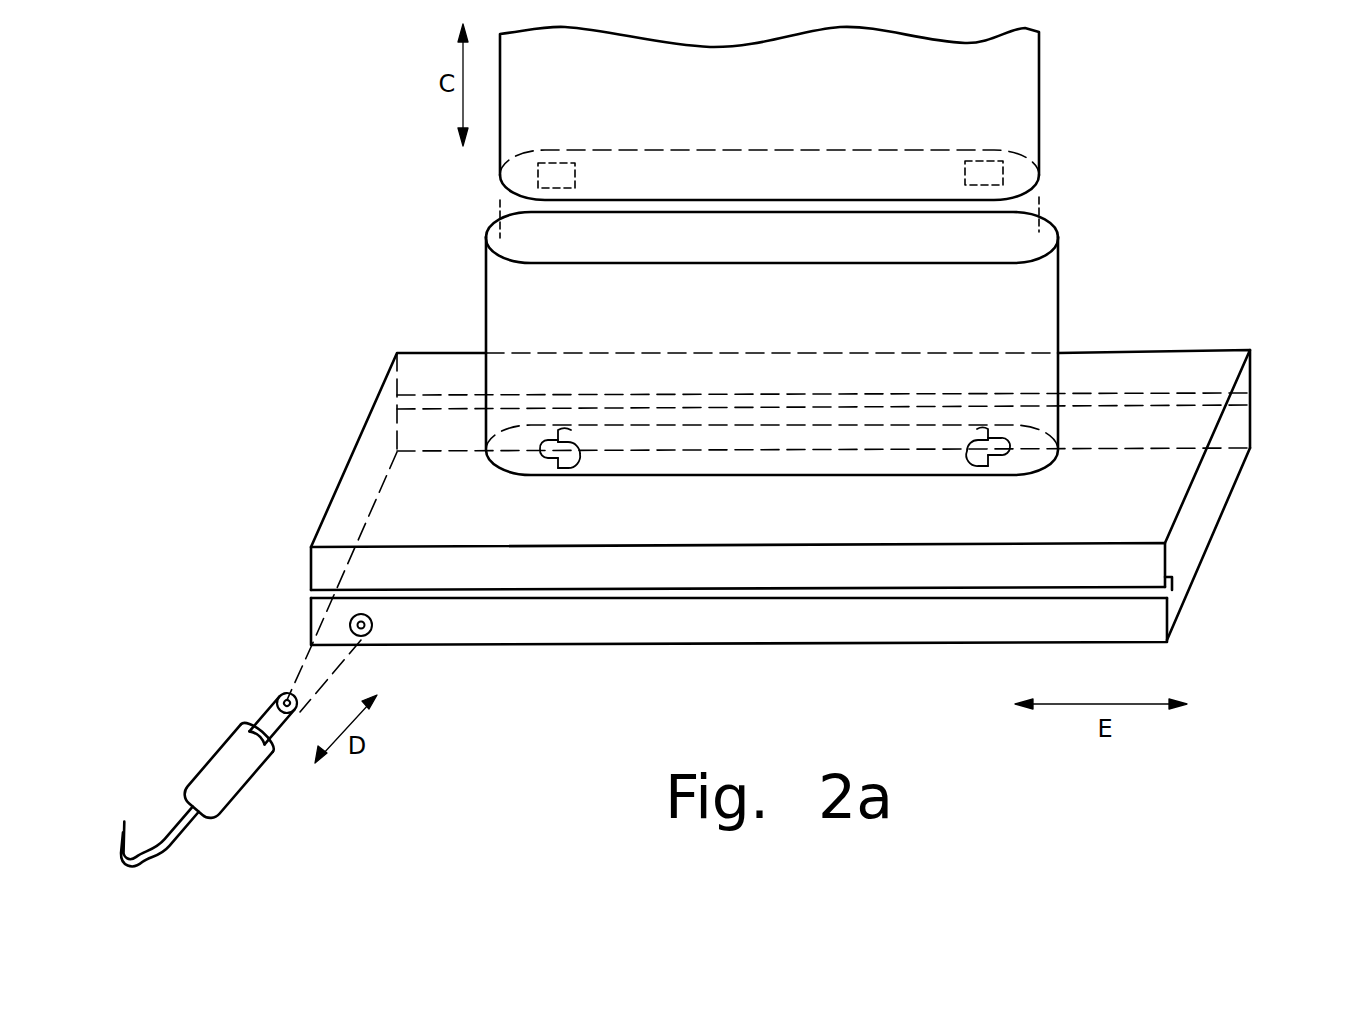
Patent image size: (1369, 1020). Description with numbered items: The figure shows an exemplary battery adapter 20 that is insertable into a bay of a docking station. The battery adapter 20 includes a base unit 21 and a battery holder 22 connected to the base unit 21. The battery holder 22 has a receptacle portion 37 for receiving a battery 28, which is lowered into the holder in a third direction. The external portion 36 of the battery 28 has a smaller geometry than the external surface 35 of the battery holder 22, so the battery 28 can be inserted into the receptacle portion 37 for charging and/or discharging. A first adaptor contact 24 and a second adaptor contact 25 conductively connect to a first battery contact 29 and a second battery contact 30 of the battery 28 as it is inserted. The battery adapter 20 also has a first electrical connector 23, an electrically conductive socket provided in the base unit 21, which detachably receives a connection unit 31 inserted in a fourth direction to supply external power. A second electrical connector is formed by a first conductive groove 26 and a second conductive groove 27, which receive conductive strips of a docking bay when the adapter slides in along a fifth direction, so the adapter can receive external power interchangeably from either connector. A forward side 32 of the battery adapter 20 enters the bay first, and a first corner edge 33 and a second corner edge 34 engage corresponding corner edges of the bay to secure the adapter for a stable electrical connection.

The battery adapter 20 is at (357, 402).
The base unit 21 is at (1195, 347).
The battery holder 22 is at (1060, 287).
The first electrical connector 23 is at (372, 632).
The first adaptor contact 24 is at (557, 456).
The second adaptor contact 25 is at (990, 456).
The first conductive groove 26 is at (822, 604).
The second conductive groove 27 is at (1250, 395).
The battery 28 is at (1042, 100).
The first battery contact 29 is at (552, 170).
The second battery contact 30 is at (980, 168).
The connection unit 31 is at (237, 790).
The forward side 32 is at (1203, 522).
The first corner edge 33 is at (1168, 623).
The second corner edge 34 is at (1252, 425).
The external surface 35 is at (1048, 222).
The external portion 36 is at (1040, 176).
The receptacle portion 37 is at (541, 245).